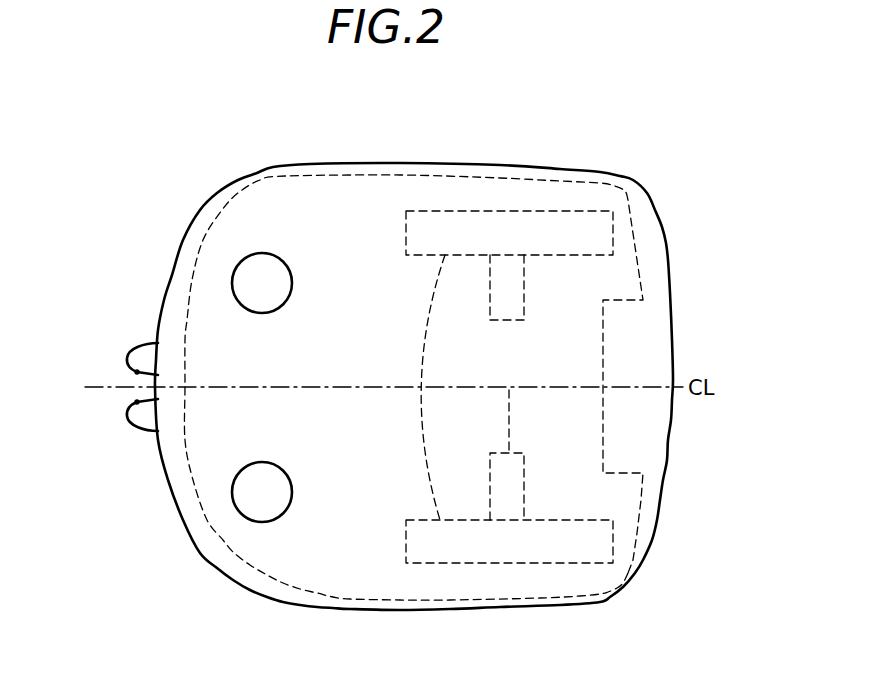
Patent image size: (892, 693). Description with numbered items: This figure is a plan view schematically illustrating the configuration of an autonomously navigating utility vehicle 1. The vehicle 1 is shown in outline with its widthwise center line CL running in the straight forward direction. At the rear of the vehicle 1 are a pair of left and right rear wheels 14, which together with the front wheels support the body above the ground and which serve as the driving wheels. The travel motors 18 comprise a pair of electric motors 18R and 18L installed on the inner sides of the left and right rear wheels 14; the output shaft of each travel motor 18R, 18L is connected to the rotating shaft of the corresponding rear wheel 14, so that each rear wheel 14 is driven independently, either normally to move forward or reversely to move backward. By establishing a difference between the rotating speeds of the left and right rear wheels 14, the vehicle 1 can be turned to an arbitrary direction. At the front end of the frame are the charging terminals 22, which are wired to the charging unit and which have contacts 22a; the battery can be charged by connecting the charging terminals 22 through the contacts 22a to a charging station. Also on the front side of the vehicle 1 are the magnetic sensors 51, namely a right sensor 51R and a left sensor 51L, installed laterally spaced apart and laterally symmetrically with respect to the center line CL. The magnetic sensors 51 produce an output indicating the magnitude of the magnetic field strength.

The autonomously navigating utility vehicle 1 is at (613, 163).
The rear wheels 14 is at (426, 387).
The travel motors 18 is at (509, 387).
The travel motor 18R is at (503, 320).
The travel motor 18L is at (510, 390).
The magnetic sensors 51 is at (248, 387).
The magnetic sensor 51R is at (262, 313).
The magnetic sensor 51L is at (262, 462).
The charging terminals 22 is at (130, 353).
The contacts 22a is at (137, 402).